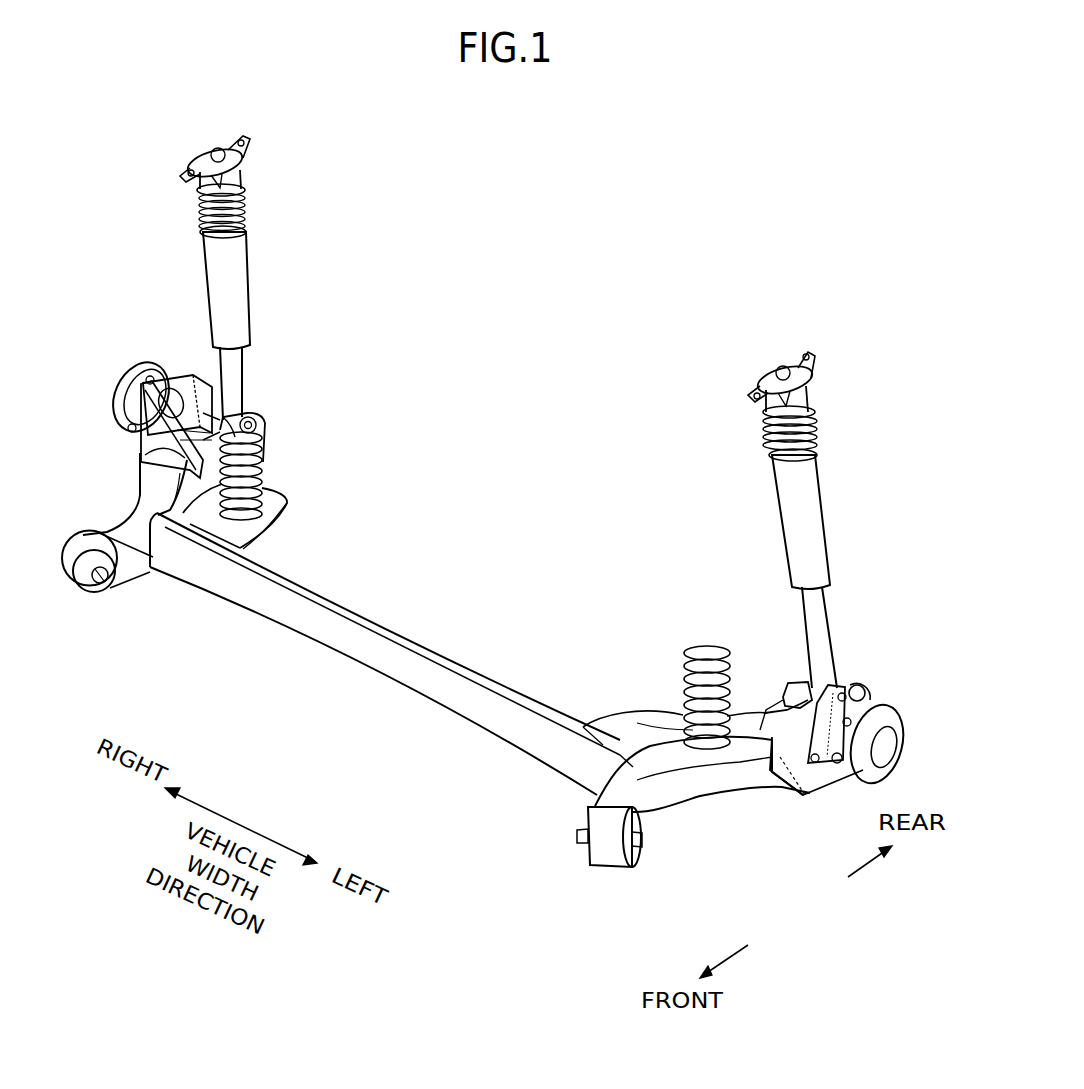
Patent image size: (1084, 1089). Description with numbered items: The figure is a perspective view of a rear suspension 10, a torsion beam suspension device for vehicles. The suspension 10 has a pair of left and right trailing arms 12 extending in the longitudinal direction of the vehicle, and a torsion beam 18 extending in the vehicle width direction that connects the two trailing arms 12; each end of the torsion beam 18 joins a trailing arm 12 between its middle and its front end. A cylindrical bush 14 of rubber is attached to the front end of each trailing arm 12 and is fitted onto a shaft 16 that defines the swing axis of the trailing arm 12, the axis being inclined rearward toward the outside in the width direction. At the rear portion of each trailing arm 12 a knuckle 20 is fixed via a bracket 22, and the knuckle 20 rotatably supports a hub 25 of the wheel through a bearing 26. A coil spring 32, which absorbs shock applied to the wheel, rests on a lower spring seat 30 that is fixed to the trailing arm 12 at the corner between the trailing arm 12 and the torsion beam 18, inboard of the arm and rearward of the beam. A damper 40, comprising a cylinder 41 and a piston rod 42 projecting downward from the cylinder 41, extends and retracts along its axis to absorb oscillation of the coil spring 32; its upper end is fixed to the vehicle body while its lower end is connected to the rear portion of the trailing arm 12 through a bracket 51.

The rear suspension 10 is at (722, 241).
The trailing arm 12 is at (150, 494).
The bush 14 is at (67, 564).
The shaft 16 is at (104, 584).
The torsion beam 18 is at (397, 674).
The knuckle 20 is at (120, 430).
The bracket 22 is at (194, 373).
The hub 25 is at (140, 366).
The bearing 26 is at (115, 392).
The lower spring seat 30 is at (262, 530).
The coil spring 32 is at (266, 478).
The damper 40 is at (306, 275).
The cylinder 41 is at (232, 295).
The piston rod 42 is at (243, 370).
The bracket 51 is at (257, 437).